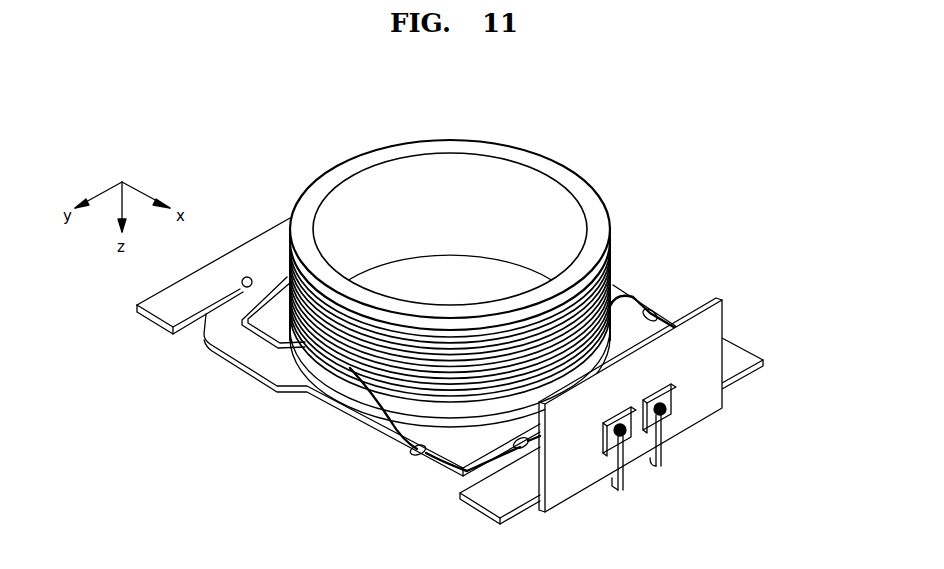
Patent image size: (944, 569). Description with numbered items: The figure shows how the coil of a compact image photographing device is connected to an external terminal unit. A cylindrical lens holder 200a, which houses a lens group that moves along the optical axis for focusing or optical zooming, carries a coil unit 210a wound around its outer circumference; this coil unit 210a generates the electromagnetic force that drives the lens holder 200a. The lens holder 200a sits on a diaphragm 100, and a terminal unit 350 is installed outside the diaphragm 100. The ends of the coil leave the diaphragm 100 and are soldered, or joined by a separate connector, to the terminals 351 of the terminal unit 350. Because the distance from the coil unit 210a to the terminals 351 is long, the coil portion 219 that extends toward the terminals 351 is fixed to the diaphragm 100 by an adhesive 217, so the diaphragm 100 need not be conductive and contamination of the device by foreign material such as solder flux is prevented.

The diaphragm 100 is at (218, 365).
The lens holder 200a is at (490, 150).
The coil unit 210a is at (340, 366).
The adhesive 217 is at (413, 454).
The coil portion 219 is at (447, 458).
The terminal unit 350 is at (708, 392).
The terminals 351 is at (625, 434).